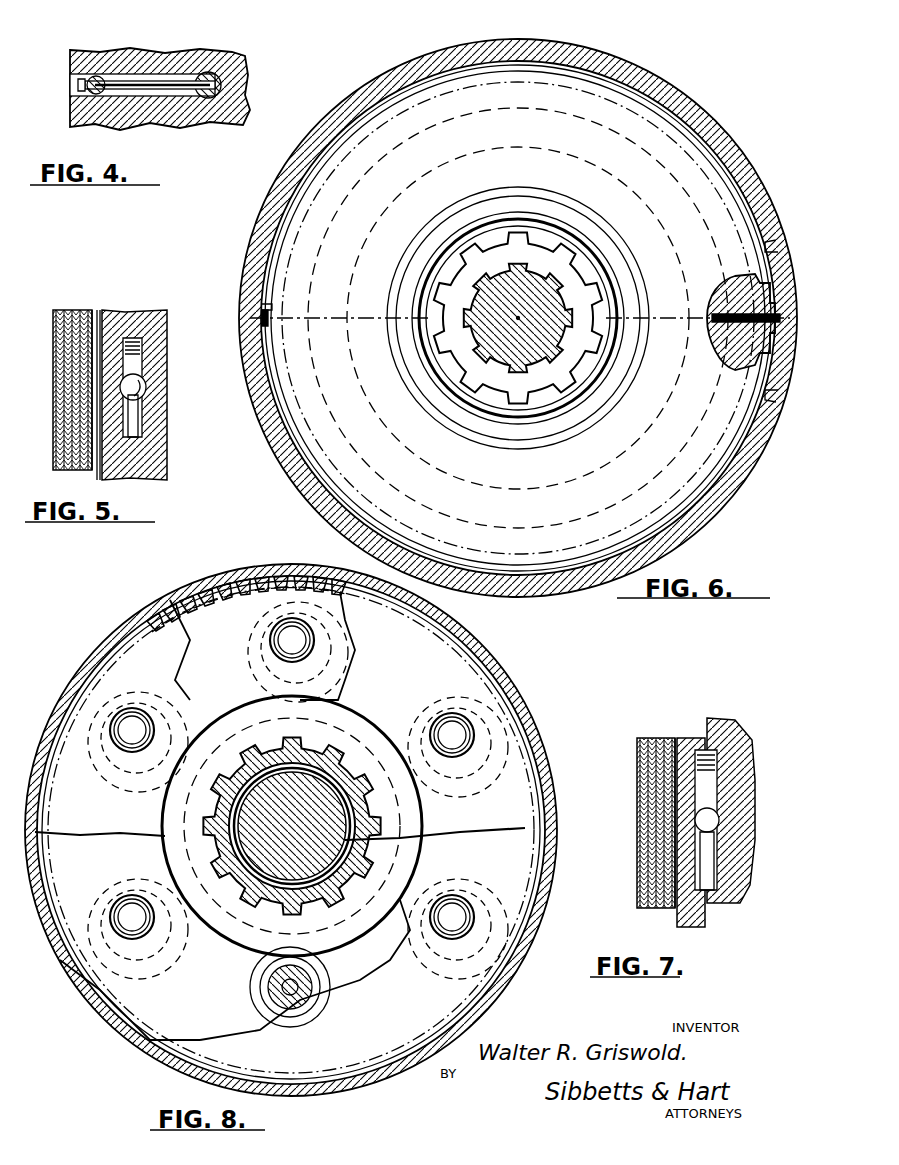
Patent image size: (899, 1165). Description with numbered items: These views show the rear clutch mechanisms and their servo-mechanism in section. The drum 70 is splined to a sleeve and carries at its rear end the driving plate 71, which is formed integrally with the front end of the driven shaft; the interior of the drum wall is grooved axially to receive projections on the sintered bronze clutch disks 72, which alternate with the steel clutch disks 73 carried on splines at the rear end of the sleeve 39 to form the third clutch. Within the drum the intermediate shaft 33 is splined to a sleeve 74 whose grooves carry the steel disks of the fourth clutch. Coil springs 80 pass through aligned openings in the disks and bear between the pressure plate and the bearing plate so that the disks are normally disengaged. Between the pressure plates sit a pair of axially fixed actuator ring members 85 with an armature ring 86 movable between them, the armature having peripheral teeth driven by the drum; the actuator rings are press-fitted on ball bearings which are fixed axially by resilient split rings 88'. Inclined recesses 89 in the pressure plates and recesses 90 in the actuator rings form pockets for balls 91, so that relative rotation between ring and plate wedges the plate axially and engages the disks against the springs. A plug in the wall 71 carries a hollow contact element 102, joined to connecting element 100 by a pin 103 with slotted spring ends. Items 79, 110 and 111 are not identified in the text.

In FIG. 6, the intermediate shaft 33 is at (528, 280).
In FIG. 8, the intermediate shaft 33 is at (302, 790).
In FIG. 8, the sleeve 39 is at (330, 775).
In FIG. 6, the drum 70 is at (660, 97).
In FIG. 8, the drum 70 is at (520, 703).
In FIG. 4, the driving plate 71 is at (245, 75).
In FIG. 5, the sintered bronze clutch disks 72 is at (92, 312).
In FIG. 7, the sintered bronze clutch disks 72 is at (672, 738).
In FIG. 8, the sintered bronze clutch disks 72 is at (250, 600).
In FIG. 5, the steel clutch disks 73 is at (62, 310).
In FIG. 7, the steel clutch disks 73 is at (645, 738).
In FIG. 8, the steel clutch disks 73 is at (435, 652).
In FIG. 6, the sleeve 74 is at (470, 240).
In FIG. 5, the plate 79 is at (99, 310).
In FIG. 7, the plate 79 is at (688, 738).
In FIG. 8, the plate 79 is at (515, 862).
In FIG. 8, the coil springs 80 is at (270, 640).
In FIG. 5, the actuator ring members 85 is at (155, 360).
In FIG. 7, the actuator ring members 85 is at (735, 860).
In FIG. 8, the actuator ring members 85 is at (190, 1072).
In FIG. 6, the armature ring 86 is at (578, 97).
In FIG. 6, the resilient split rings 88' is at (539, 318).
In FIG. 5, the recesses 89 is at (142, 340).
In FIG. 7, the recesses 89 is at (717, 760).
In FIG. 5, the recesses 90 is at (128, 420).
In FIG. 7, the recesses 90 is at (700, 862).
In FIG. 8, the recesses 90 is at (312, 982).
In FIG. 5, the balls 91 is at (146, 387).
In FIG. 7, the balls 91 is at (719, 820).
In FIG. 8, the balls 91 is at (430, 760).
In FIG. 4, the connecting element 100 is at (205, 72).
In FIG. 4, the hollow contact element 102 is at (96, 94).
In FIG. 4, the pin 103 is at (145, 85).
In FIG. 6, the ring 110 is at (545, 415).
In FIG. 6, the gear ring 111 is at (560, 425).